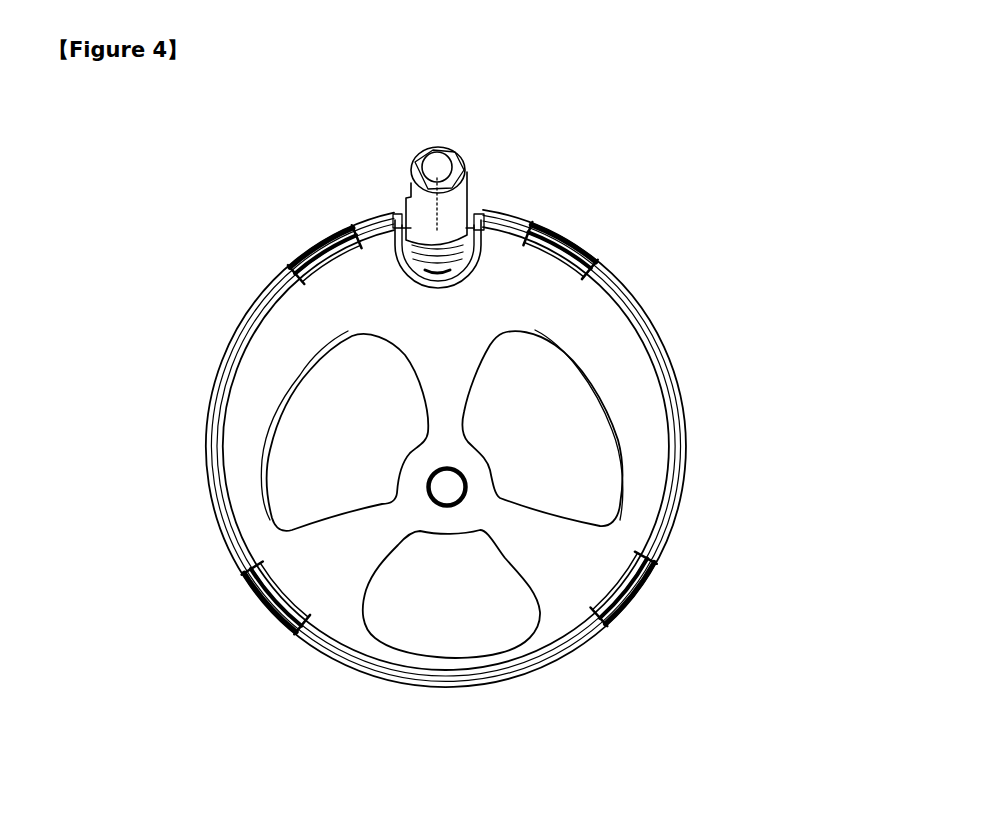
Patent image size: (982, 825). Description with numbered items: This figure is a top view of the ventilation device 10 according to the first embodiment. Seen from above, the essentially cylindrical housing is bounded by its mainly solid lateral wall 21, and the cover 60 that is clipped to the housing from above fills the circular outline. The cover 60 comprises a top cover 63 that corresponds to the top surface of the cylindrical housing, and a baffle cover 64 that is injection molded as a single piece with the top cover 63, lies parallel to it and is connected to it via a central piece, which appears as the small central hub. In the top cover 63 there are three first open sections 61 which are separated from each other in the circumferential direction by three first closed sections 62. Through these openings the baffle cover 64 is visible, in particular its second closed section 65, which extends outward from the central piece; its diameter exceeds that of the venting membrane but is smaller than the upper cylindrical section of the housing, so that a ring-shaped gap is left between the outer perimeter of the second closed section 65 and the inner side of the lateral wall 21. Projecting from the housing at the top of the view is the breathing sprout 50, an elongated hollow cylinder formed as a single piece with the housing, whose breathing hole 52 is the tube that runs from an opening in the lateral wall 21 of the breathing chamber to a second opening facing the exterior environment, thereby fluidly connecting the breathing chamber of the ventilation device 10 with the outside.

The ventilation device 10 is at (709, 203).
The lateral wall 21 is at (669, 539).
The breathing sprout 50 is at (470, 173).
The breathing hole 52 is at (437, 168).
The cover 60 is at (655, 422).
The first open sections 61 is at (327, 443).
The first closed sections 62 is at (337, 600).
The top cover 63 is at (730, 285).
The baffle cover 64 is at (453, 637).
The second closed section 65 is at (546, 444).